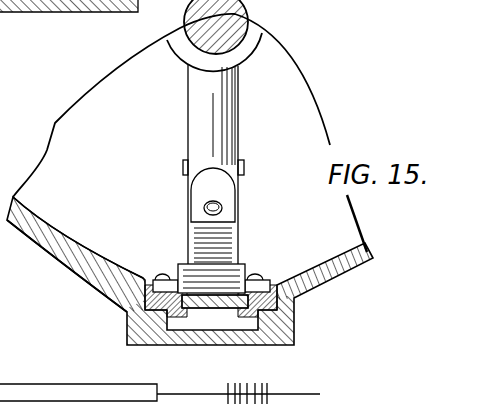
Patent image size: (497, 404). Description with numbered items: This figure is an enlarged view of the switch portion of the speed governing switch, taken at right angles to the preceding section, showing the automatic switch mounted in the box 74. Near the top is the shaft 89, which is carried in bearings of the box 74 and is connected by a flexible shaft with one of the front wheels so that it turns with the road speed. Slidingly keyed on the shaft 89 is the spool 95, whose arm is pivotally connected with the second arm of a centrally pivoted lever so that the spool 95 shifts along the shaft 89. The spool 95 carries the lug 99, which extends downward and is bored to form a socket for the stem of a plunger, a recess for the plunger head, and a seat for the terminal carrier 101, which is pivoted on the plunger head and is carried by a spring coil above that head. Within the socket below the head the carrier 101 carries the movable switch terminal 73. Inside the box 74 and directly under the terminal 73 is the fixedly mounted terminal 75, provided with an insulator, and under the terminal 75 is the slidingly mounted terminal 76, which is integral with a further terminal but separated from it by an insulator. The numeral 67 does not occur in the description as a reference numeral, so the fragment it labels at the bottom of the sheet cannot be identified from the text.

The shaft 89 is at (232, 33).
The spool 95 is at (253, 58).
The lug 99 is at (197, 120).
The terminal carrier 101 is at (203, 190).
The switch terminal 73 is at (225, 240).
The terminal 75 is at (245, 266).
The terminal 76 is at (212, 308).
The box 74 is at (62, 268).
The rod 67 is at (32, 384).